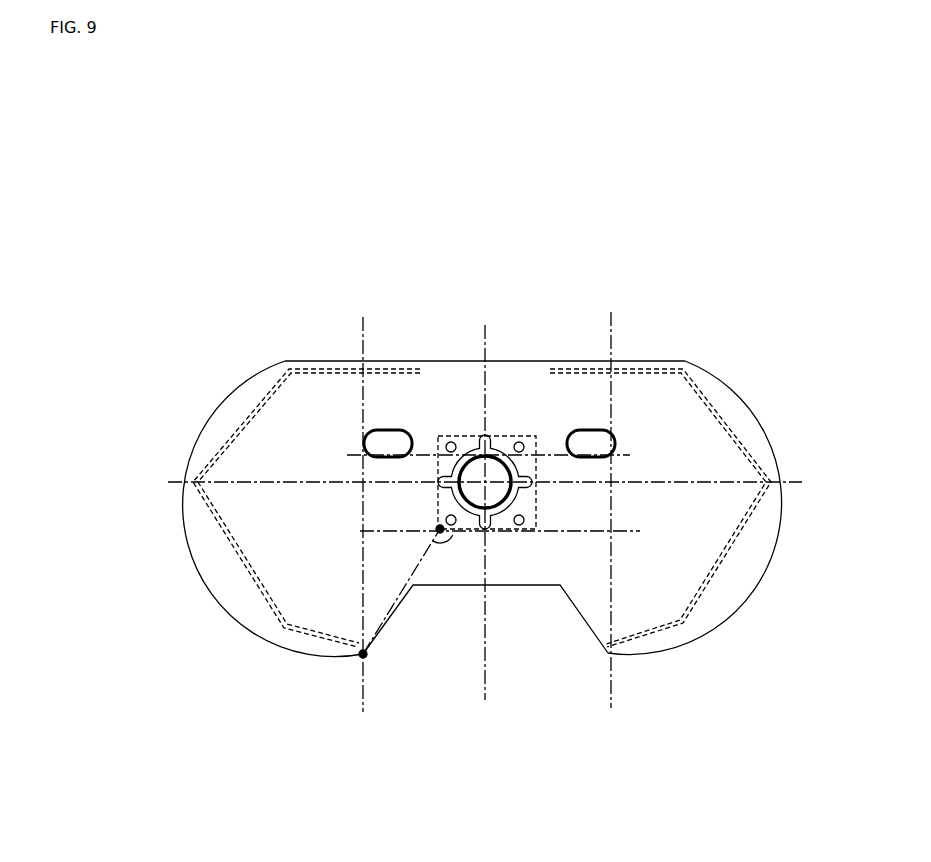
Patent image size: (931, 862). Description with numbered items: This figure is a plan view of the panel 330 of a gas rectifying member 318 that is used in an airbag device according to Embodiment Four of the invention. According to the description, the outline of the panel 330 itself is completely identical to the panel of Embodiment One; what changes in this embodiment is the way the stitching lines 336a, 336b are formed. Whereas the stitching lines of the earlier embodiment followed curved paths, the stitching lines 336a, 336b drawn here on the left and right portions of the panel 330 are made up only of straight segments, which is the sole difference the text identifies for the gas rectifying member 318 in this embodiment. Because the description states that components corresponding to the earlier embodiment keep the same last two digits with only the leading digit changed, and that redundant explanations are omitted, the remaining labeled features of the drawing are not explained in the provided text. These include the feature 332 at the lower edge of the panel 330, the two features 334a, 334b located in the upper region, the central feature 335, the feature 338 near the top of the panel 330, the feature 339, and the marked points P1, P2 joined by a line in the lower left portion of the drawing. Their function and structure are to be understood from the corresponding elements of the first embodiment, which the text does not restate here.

The gas rectifying member 318 is at (683, 330).
The panel 330 is at (263, 368).
The notch 332 is at (577, 618).
The first slot 334a is at (386, 428).
The second slot 334b is at (588, 433).
The boss 335 is at (535, 468).
The stitching line 336a is at (233, 428).
The stitching line 336b is at (713, 578).
The top edge 338 is at (513, 363).
The mounting region 339 is at (438, 497).
The first point P1 is at (363, 660).
The second point P2 is at (440, 529).